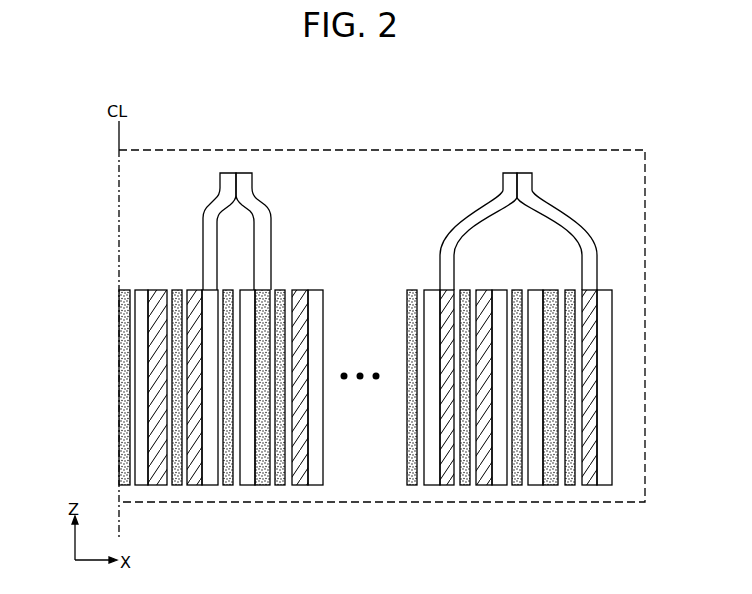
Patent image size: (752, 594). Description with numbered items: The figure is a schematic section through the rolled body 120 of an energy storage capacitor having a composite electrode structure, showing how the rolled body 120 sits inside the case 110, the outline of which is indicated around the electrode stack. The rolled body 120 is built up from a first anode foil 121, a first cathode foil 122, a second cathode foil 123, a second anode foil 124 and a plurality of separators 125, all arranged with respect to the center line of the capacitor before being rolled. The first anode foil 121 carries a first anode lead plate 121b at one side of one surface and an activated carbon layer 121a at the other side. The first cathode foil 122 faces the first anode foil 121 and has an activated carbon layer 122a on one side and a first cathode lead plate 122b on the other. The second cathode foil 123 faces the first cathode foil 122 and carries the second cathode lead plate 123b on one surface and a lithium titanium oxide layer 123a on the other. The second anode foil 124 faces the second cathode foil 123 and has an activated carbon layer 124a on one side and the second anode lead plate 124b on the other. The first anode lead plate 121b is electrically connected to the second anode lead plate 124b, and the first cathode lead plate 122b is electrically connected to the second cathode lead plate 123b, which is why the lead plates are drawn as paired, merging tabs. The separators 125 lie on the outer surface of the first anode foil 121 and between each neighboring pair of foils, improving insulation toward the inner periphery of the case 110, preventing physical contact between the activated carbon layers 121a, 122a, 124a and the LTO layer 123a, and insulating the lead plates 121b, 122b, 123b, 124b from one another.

The case 110 is at (362, 148).
The rolled body 120 is at (324, 210).
The first anode foil 121 is at (146, 474).
The activated carbon layer 121a is at (155, 474).
The first anode lead plate 121b is at (473, 226).
The first cathode foil 122 is at (213, 474).
The activated carbon layer 122a is at (197, 474).
The first cathode lead plate 122b is at (207, 226).
The second cathode foil 123 is at (247, 474).
The lithium titanium oxide (LTO) layer 123a is at (263, 474).
The second cathode lead plate 123b is at (263, 236).
The second anode foil 124 is at (317, 474).
The activated carbon layer 124a is at (300, 474).
The second anode lead plate 124b is at (576, 232).
The separators 125 is at (122, 393).